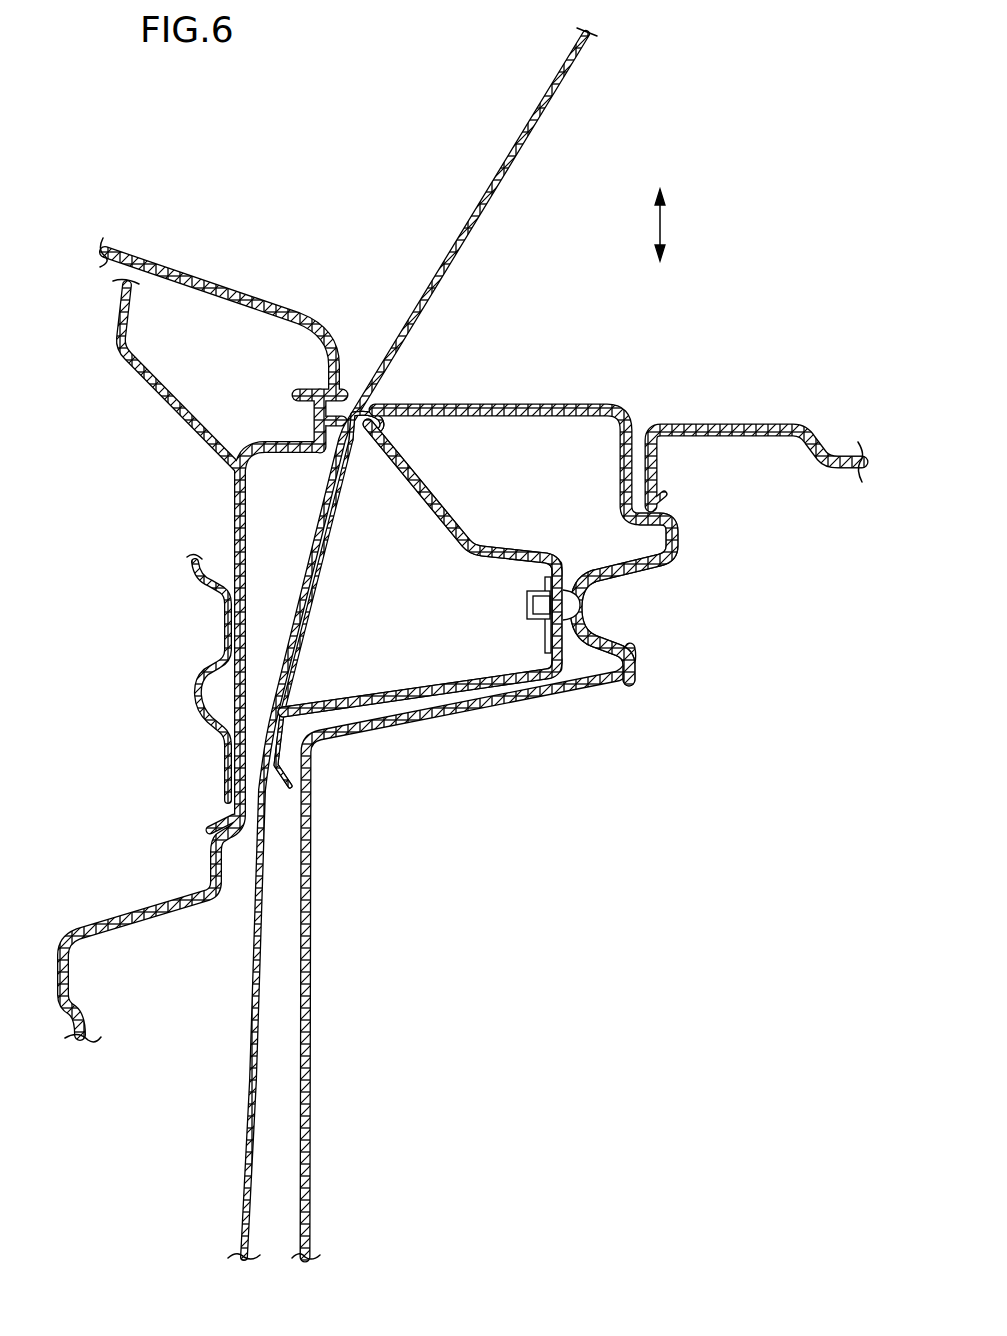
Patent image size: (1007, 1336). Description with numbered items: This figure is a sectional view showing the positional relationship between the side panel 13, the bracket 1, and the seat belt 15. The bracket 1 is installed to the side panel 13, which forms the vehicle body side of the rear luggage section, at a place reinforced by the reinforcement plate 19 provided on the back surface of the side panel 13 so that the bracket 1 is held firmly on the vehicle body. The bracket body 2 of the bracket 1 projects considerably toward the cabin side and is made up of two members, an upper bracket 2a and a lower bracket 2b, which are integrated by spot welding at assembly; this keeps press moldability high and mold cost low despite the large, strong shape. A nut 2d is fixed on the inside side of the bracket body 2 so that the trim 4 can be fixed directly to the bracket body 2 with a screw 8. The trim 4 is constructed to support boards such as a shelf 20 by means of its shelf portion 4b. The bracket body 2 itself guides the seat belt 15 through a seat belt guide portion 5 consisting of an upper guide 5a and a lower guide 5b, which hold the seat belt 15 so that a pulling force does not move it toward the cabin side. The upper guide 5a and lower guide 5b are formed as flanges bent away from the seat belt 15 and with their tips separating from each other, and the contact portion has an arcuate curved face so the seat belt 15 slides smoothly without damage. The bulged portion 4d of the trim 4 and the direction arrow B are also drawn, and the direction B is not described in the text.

The bracket 1 is at (416, 722).
The bracket body 2 is at (421, 604).
The upper bracket 2a is at (440, 520).
The lower bracket 2b is at (358, 702).
The nut 2d is at (530, 620).
The trim 4 is at (579, 494).
The shelf portion 4b is at (680, 532).
The bulged portion of cowl top garnish 4d is at (590, 600).
The seat belt guide portion 5 is at (374, 608).
The upper guide 5a is at (364, 416).
The lower guide 5b is at (322, 747).
The screw 8 is at (598, 618).
The side panel 13 is at (145, 370).
The seat belt 15 is at (527, 120).
The reinforcement plate 19 is at (197, 682).
The shelf 20 is at (757, 422).
The vertical direction B is at (662, 221).